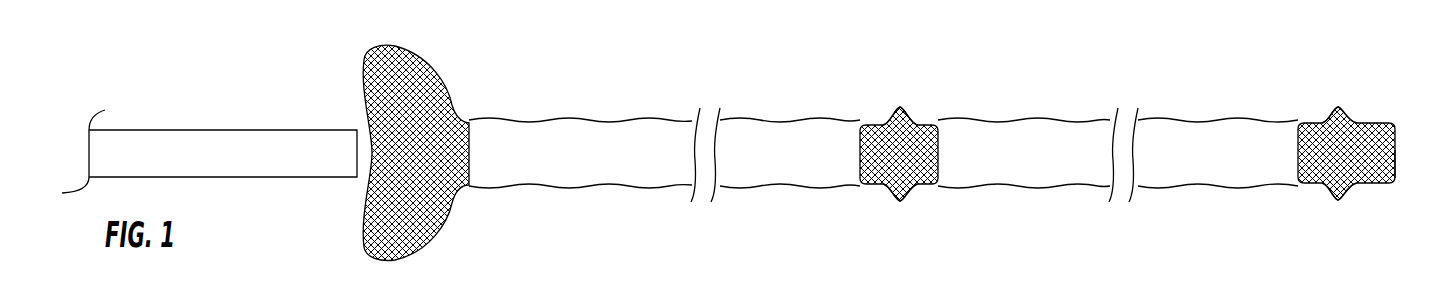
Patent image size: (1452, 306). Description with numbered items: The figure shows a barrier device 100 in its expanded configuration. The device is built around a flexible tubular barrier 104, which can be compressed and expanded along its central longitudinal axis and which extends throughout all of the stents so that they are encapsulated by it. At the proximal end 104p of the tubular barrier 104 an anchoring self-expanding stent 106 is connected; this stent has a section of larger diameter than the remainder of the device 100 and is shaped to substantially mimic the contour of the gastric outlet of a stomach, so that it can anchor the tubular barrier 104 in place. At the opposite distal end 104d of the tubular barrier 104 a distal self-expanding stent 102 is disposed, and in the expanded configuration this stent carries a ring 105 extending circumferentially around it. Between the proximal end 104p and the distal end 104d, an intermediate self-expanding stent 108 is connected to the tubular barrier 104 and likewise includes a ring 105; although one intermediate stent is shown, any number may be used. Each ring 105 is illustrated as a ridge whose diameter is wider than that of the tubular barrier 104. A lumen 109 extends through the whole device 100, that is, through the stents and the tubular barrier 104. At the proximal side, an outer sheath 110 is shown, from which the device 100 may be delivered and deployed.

The barrier device 100 is at (894, 120).
The distal self-expanding stent 102 is at (1377, 123).
The tubular barrier 104 is at (894, 131).
The proximal end 104p is at (477, 120).
The distal end 104d is at (1296, 123).
The ring 105 is at (900, 107).
The anchoring self-expanding stent 106 is at (437, 64).
The intermediate self-expanding stent 108 is at (925, 125).
The lumen 109 is at (1405, 168).
The outer sheath 110 is at (272, 130).